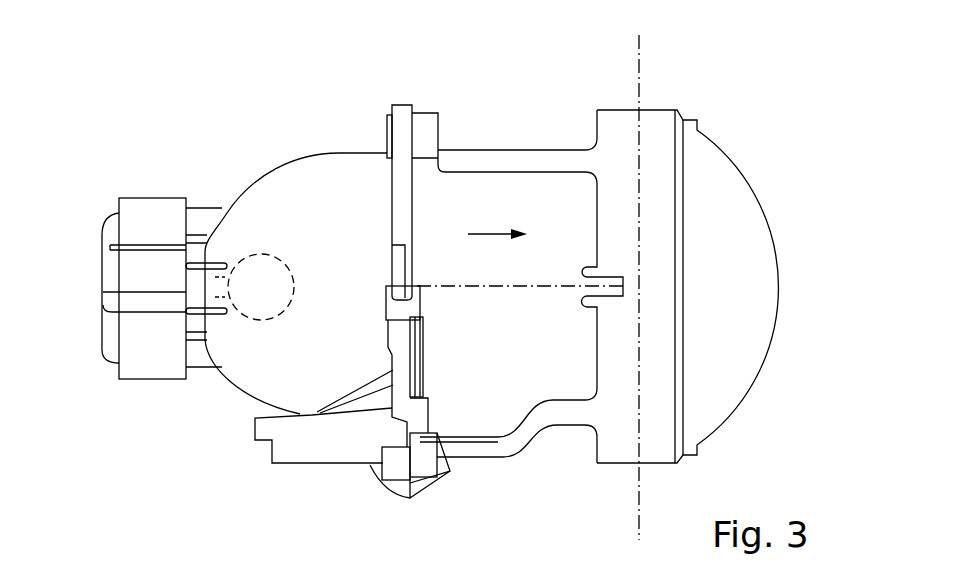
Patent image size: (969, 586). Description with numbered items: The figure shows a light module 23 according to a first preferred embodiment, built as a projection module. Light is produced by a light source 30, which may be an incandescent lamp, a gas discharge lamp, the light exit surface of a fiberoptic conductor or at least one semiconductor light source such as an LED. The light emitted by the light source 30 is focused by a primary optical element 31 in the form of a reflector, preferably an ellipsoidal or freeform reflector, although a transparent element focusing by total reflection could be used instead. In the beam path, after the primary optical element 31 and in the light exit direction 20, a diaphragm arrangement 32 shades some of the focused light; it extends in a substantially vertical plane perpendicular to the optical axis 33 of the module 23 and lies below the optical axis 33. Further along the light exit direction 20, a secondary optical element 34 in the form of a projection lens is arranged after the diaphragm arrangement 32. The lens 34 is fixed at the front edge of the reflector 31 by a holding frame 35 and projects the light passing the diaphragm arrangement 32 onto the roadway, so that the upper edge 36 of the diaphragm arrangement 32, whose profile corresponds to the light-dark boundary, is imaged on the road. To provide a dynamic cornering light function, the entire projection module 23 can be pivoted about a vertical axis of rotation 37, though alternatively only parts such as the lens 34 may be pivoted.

The light exit direction 20 is at (492, 232).
The light module 23 is at (690, 63).
The light source 30 is at (260, 263).
The primary optical element 31 is at (318, 168).
The diaphragm arrangement 32 is at (423, 333).
The optical axis 33 is at (105, 286).
The secondary optical element 34 is at (745, 208).
The holding frame 35 is at (558, 158).
The upper edge 36 is at (420, 297).
The vertical axis of rotation 37 is at (638, 70).